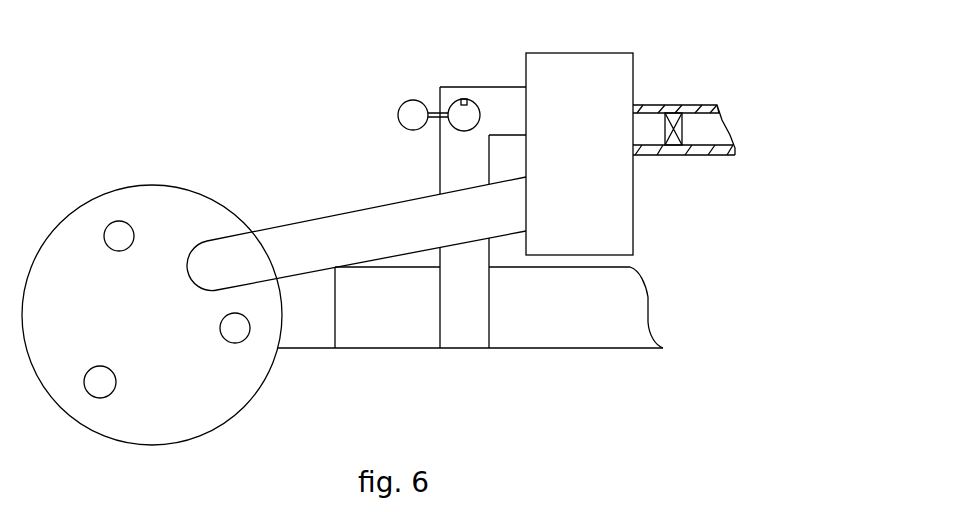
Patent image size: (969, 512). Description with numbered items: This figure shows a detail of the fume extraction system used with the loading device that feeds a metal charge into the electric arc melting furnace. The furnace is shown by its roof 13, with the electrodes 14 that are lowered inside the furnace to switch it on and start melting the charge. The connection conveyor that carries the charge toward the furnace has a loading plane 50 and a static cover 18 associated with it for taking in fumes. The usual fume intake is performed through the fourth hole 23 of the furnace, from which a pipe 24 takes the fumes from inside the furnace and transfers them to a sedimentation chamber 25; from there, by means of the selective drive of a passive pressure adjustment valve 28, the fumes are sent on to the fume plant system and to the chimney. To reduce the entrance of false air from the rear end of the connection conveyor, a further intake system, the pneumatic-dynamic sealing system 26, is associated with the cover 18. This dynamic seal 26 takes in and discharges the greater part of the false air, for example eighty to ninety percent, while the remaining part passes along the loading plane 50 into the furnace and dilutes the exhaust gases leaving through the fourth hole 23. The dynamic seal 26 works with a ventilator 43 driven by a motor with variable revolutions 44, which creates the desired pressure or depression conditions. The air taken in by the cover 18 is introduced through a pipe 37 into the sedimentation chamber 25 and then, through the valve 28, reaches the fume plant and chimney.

The roof 13 is at (187, 407).
The electrodes 14 is at (119, 232).
The static cover 18 is at (592, 330).
The fourth hole 23 is at (212, 257).
The pipe 24 is at (353, 225).
The sedimentation chamber 25 is at (617, 70).
The pneumatic-dynamic sealing system 26 is at (467, 330).
The passive pressure adjustment valve 28 is at (668, 145).
The pipe 37 is at (503, 105).
The ventilator 43 is at (460, 108).
The motor with variable revolutions 44 is at (405, 117).
The loading plane 50 is at (311, 333).